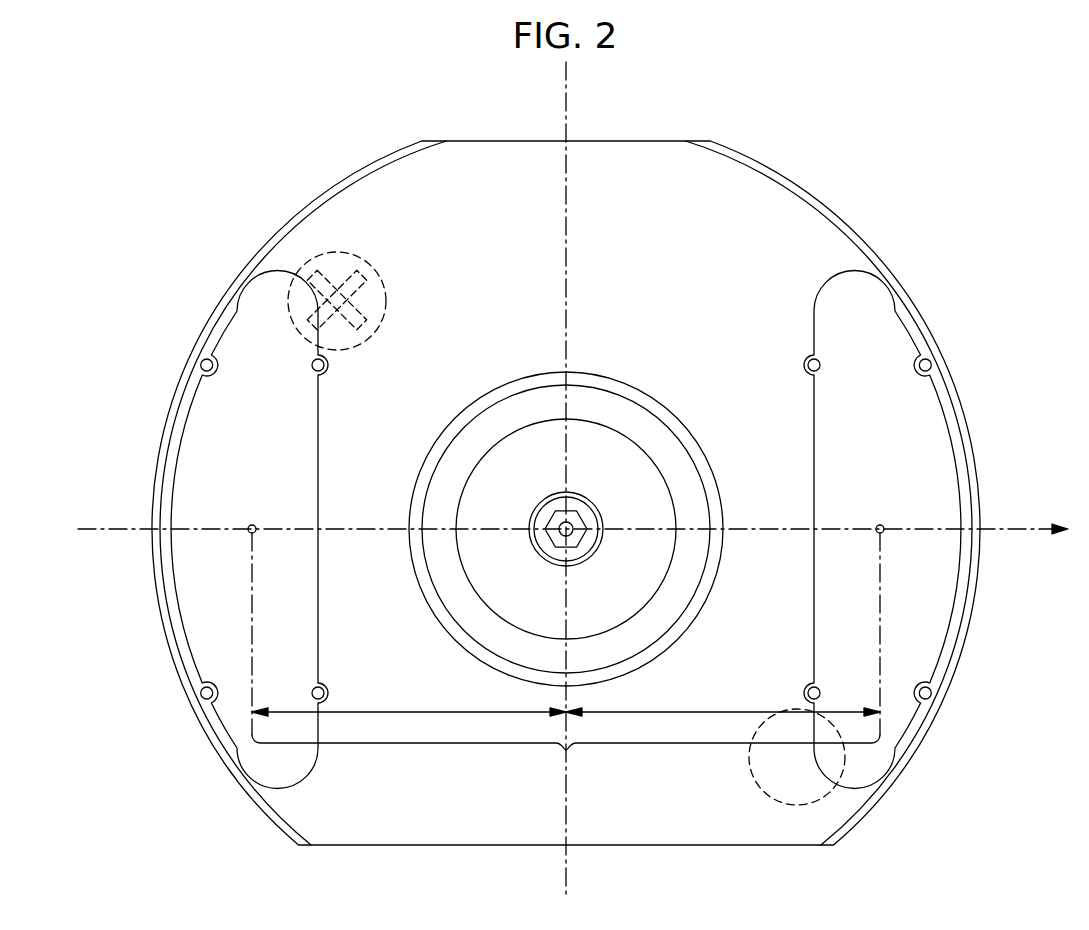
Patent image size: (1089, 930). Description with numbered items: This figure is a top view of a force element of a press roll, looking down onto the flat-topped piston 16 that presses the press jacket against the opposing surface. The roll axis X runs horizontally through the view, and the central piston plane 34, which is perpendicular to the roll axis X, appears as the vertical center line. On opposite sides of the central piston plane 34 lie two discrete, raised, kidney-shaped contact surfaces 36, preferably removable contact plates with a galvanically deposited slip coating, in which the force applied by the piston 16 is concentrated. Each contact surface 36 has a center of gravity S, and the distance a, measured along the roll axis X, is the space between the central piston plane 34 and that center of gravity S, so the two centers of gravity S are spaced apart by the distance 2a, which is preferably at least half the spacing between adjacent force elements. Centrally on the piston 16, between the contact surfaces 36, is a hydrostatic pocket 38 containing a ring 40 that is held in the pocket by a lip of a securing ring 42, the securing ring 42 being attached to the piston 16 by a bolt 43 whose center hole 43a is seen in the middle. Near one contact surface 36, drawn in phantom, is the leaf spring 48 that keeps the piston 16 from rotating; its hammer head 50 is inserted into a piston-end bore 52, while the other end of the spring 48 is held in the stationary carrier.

The piston 16 is at (828, 227).
The central piston plane 34 is at (568, 118).
The contact surfaces 36 is at (247, 320).
The hydrostatic pocket 38 is at (657, 478).
The ring 40 is at (434, 456).
The securing ring 42 is at (606, 402).
The bolt 43 is at (580, 510).
The center hole of nut 43a is at (573, 534).
The leaf spring 48 is at (322, 265).
The hammer head 50 is at (368, 269).
The piston-end bore 52 is at (384, 310).
The distance between centers of gravity 2a is at (566, 752).
The center of gravity S is at (250, 526).
The roll axis X is at (1012, 525).
The distance a is at (410, 712).